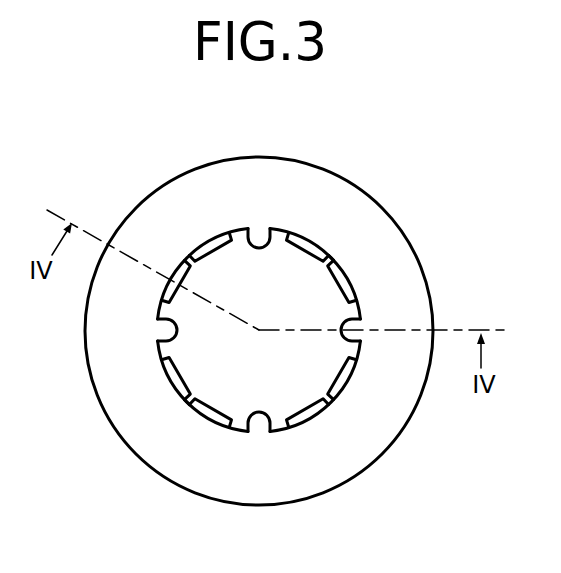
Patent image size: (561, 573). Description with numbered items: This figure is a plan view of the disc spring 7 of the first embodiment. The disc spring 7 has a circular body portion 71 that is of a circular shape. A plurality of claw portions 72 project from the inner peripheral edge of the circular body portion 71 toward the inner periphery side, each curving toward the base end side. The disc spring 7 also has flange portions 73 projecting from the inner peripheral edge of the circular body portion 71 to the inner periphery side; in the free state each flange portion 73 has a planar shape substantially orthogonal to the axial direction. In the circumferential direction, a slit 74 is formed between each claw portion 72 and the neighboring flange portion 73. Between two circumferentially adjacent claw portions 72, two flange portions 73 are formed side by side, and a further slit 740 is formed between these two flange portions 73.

The disc spring 7 is at (423, 197).
The circular body portion 71 is at (338, 462).
The claw portion 72 is at (258, 237).
The flange portion 73 is at (313, 243).
The slit 74 is at (233, 238).
The slit 740 is at (330, 258).